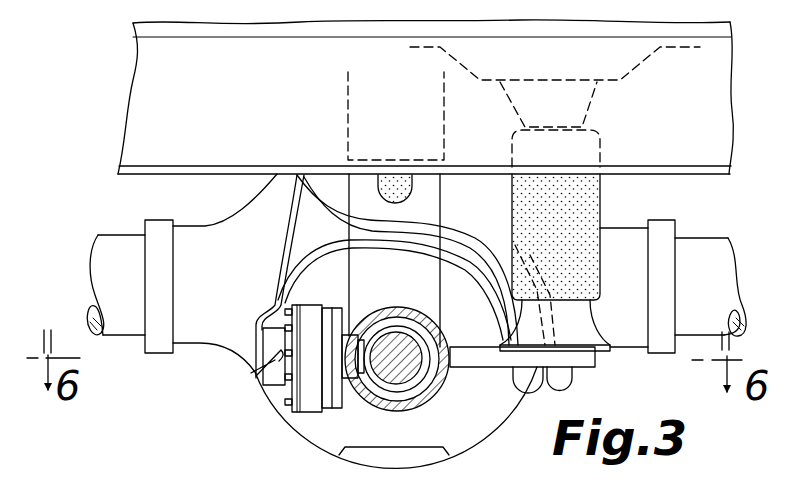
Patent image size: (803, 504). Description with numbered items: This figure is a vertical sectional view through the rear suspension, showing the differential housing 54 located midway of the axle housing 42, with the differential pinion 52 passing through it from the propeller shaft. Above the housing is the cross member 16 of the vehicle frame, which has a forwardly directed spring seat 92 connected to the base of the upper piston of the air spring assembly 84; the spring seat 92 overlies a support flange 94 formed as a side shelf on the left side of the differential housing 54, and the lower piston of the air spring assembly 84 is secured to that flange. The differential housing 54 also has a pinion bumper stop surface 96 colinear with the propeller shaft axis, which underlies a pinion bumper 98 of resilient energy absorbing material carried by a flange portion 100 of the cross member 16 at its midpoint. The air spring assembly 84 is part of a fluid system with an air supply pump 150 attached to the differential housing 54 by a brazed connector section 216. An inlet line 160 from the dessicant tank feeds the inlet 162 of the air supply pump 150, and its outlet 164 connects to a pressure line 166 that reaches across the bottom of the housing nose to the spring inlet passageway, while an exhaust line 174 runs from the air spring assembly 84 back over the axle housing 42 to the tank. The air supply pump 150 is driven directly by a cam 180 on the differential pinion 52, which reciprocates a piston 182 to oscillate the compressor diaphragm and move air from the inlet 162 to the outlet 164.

The cross member 16 is at (143, 97).
The axle housing 42 is at (127, 252).
The differential pinion 52 is at (398, 340).
The differential housing 54 is at (247, 221).
The air spring assembly 84 is at (604, 210).
The spring seat 92 is at (601, 68).
The support flange 94 is at (590, 357).
The pinion bumper stop surface 96 is at (367, 258).
The pinion bumper 98 is at (405, 182).
The flange portion 100 is at (345, 125).
The air supply pump 150 is at (282, 389).
The inlet line 160 is at (273, 280).
The inlet 162 is at (270, 323).
The outlet 164 is at (253, 376).
The pressure line 166 is at (291, 272).
The exhaust line 174 is at (470, 228).
The cam 180 is at (427, 373).
The piston 182 is at (366, 333).
The brazed connector section 216 is at (337, 402).